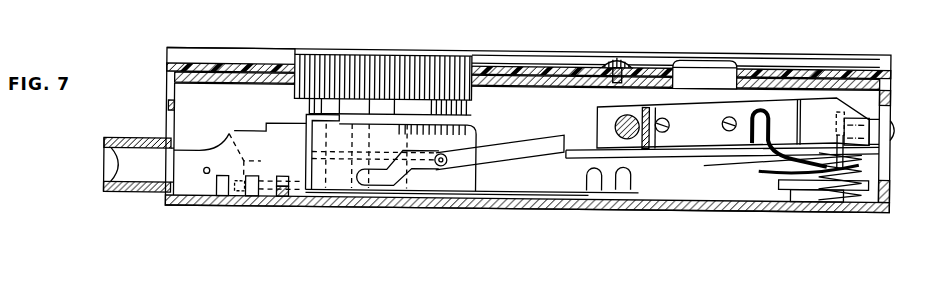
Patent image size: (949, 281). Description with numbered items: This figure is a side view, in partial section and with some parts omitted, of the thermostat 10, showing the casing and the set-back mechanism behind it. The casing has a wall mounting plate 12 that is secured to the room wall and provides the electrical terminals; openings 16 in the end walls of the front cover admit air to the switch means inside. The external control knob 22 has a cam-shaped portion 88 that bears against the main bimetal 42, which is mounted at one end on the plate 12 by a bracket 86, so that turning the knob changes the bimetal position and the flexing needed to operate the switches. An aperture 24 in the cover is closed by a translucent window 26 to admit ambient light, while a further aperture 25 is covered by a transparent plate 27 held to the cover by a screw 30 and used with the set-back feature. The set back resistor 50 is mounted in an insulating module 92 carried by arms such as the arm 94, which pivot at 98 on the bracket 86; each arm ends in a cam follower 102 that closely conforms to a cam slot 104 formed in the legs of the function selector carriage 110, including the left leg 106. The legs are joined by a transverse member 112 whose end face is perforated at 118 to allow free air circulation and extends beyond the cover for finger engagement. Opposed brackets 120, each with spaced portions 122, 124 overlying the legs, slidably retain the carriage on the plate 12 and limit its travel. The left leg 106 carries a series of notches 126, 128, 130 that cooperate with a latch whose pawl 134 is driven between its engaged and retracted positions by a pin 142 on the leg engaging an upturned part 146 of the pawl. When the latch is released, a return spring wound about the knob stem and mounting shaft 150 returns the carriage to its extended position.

The thermostat 10 is at (193, 47).
The wall mounting plate 12 is at (690, 203).
The openings 16 is at (168, 114).
The external control knob 22 is at (428, 56).
The aperture 24 is at (740, 60).
The aperture 25 is at (235, 84).
The translucent window 26 is at (683, 56).
The transparent plate 27 is at (218, 64).
The screw 30 is at (615, 53).
The main bimetal 42 is at (640, 153).
The set back resistor 50 is at (617, 118).
The bracket 86 is at (850, 138).
The cam-shaped portion 88 is at (448, 115).
The module 92 is at (739, 97).
The arm 94 is at (766, 101).
The pivot 98 is at (866, 111).
The cam follower 102 is at (445, 163).
The cam slot 104 is at (370, 182).
The left leg 106 is at (490, 184).
The function selector carriage 110 is at (204, 114).
The transverse member 112 is at (128, 192).
The perforations 118 is at (108, 155).
The bracket 120 is at (515, 194).
The spaced portion 122 is at (307, 113).
The spaced portion 124 is at (603, 191).
The notch 126 is at (287, 175).
The notch 128 is at (257, 196).
The notch 130 is at (226, 192).
The pawl 134 is at (285, 196).
The pin 142 is at (208, 166).
The upturned part 146 is at (218, 139).
The knob stem and mounting shaft 150 is at (400, 186).